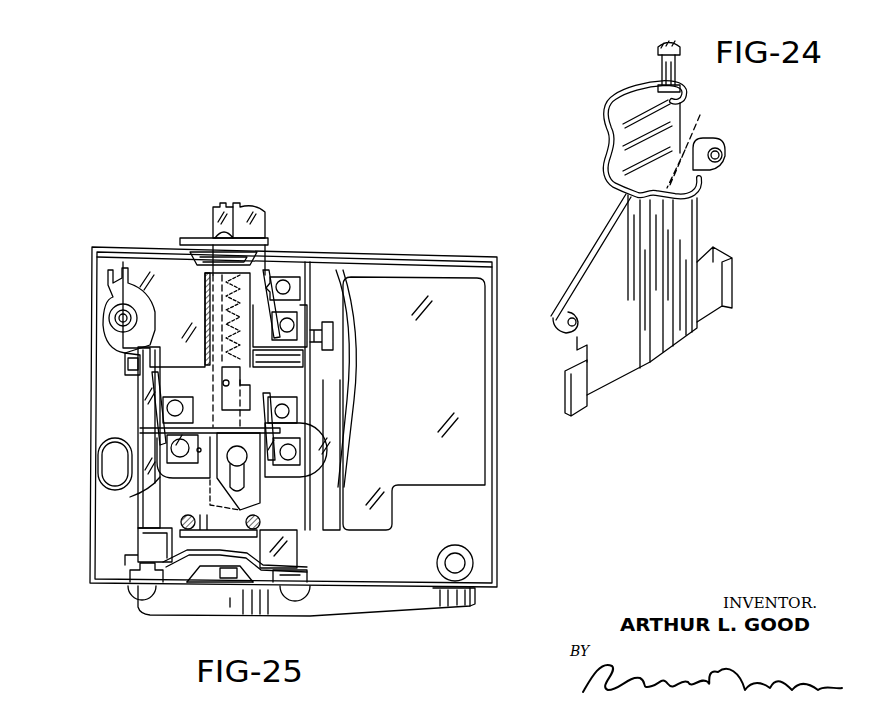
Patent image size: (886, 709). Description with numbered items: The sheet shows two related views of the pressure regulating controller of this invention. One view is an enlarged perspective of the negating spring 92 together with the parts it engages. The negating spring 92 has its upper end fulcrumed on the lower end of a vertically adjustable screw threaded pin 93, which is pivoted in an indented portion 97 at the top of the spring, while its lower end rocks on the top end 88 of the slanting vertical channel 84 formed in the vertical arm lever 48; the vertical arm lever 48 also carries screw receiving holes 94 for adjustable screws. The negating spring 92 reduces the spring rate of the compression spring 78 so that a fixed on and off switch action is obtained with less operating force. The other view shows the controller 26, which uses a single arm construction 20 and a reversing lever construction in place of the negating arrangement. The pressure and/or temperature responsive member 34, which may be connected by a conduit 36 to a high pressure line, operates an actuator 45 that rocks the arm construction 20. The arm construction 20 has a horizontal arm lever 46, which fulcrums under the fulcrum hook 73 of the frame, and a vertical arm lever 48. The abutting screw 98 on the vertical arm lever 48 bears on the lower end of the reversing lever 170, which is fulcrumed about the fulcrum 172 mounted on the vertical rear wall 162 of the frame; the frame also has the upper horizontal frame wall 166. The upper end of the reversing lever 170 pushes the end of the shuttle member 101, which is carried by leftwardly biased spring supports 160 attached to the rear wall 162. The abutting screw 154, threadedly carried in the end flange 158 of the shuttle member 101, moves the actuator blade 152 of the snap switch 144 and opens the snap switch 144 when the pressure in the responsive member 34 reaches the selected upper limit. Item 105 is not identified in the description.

In FIG. 25, the arm construction 20 is at (122, 508).
In FIG. 25, the pressure regulator 26 is at (418, 222).
In FIG. 25, the pressure and/or temperature responsive member 34 is at (142, 608).
In FIG. 25, the fluid pressure conducting conduit 36 is at (290, 14).
In FIG. 25, the actuator 45 is at (212, 577).
In FIG. 25, the horizontal arm lever 46 is at (298, 553).
In FIG. 25, the vertical arm lever 48 is at (133, 547).
In FIG. 24, the vertical arm lever 48 is at (620, 360).
In FIG. 25, the fulcrum hook 73 is at (150, 565).
In FIG. 25, the compression spring 78 is at (258, 524).
In FIG. 25, the slanting vertical channel 84 is at (146, 398).
In FIG. 24, the slanting vertical channel 84 is at (688, 228).
In FIG. 24, the top end of channel 88 is at (693, 144).
In FIG. 24, the negating spring 92 is at (608, 130).
In FIG. 24, the screw threaded pin 93 is at (660, 46).
In FIG. 24, the screw receiving hole 94 is at (722, 155).
In FIG. 24, the indented portion 97 is at (665, 91).
In FIG. 25, the abutting screw 98 is at (147, 390).
In FIG. 25, the shuttle member 101 is at (155, 278).
In FIG. 25, the handle 105 is at (215, 206).
In FIG. 25, the snap switch 144 is at (473, 300).
In FIG. 25, the actuator blade 152 is at (343, 382).
In FIG. 25, the abutting screw 154 is at (330, 335).
In FIG. 25, the end flange 158 is at (312, 296).
In FIG. 25, the spring support 160 is at (130, 496).
In FIG. 25, the vertical rear wall 162 is at (122, 262).
In FIG. 25, the upper horizontal frame wall 166 is at (437, 257).
In FIG. 25, the reversing lever 170 is at (112, 350).
In FIG. 25, the fulcrum 172 is at (118, 318).